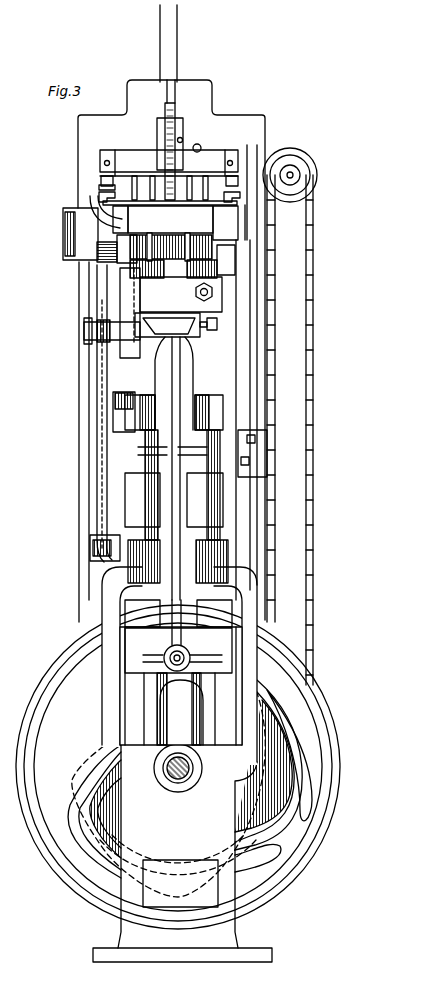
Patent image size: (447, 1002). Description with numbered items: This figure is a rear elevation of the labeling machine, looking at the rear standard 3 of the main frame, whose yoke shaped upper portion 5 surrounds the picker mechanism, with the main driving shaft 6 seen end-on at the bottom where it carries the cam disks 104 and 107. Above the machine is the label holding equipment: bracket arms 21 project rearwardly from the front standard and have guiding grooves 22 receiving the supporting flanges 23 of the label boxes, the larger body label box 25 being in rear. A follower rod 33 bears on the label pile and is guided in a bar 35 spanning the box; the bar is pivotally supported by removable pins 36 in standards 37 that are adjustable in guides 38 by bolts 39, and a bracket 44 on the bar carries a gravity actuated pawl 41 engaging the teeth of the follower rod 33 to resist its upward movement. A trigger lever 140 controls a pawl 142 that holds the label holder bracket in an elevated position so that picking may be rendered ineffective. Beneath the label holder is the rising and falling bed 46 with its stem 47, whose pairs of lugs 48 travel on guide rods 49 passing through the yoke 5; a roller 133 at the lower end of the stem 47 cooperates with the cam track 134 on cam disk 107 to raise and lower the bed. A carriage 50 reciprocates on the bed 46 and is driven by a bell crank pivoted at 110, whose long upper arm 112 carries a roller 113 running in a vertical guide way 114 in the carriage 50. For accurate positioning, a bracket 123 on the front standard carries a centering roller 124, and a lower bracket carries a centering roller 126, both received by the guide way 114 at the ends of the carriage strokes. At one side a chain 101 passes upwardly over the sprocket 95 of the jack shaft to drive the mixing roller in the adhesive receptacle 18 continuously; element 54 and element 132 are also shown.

The trigger lever 140 is at (172, 38).
The pawl 142 is at (172, 92).
The follower rod 33 is at (165, 110).
The bracket 44 is at (183, 140).
The gravity actuated pawl 41 is at (201, 148).
The bar 35 is at (134, 162).
The removable pins 36 is at (107, 160).
The standards 37 is at (232, 160).
The bolts 39 is at (99, 183).
The guides 38 is at (99, 195).
The guiding grooves 22 is at (100, 207).
The supporting flanges 23 is at (120, 212).
The label box 25 is at (171, 236).
The bracket arms 21 is at (246, 223).
The sprocket 95 is at (300, 190).
The chain 101 is at (314, 600).
The bracket 123 is at (80, 240).
The centering roller 124 is at (114, 262).
The bracket 54 is at (214, 266).
The vertical guide way 114 is at (132, 298).
The roller 113 is at (125, 342).
The long upper arm 112 is at (96, 424).
The centering roller 126 is at (128, 392).
The pivot 110 is at (90, 548).
The carriage 50 is at (165, 313).
The rising and falling bed 46 is at (178, 336).
The stem 47 is at (182, 376).
The lugs 48 is at (145, 446).
The yoke shaped upper portion 5 is at (108, 668).
The adhesive receptacle 18 is at (158, 652).
The roller 133 is at (176, 672).
The guide rods 49 is at (205, 718).
The cam disk 104 is at (34, 698).
The cam disk 107 is at (110, 732).
The cam track 134 is at (82, 790).
The spoke 132 is at (278, 730).
The main driving shaft 6 is at (175, 777).
The rear standard 3 is at (182, 853).